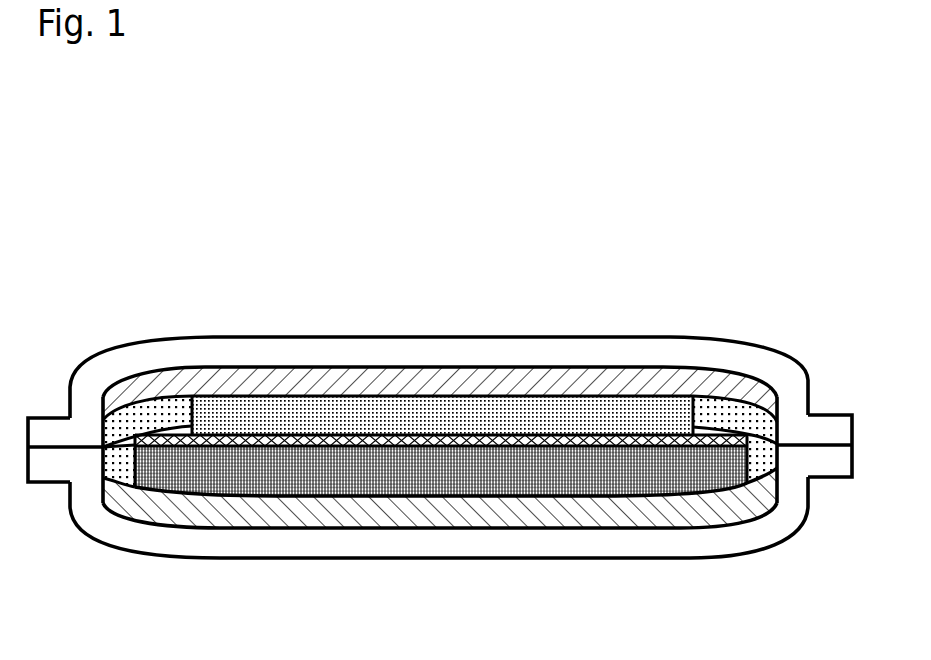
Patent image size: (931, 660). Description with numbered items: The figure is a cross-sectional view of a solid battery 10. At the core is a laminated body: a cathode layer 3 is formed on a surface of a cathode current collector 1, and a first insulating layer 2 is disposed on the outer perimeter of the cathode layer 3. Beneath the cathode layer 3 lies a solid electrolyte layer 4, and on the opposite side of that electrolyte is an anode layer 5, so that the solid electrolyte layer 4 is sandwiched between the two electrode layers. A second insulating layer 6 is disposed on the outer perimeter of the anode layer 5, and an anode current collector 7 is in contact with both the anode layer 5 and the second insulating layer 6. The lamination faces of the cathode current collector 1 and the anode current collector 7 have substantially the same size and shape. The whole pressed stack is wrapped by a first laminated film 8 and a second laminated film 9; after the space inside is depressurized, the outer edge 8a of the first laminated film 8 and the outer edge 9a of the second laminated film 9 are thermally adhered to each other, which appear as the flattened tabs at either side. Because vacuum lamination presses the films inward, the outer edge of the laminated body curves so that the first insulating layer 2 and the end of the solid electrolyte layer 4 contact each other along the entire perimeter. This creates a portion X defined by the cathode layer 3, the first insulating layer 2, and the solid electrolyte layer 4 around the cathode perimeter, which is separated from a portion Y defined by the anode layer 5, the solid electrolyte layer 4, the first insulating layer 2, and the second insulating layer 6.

The cathode current collector 1 is at (468, 380).
The first insulating layer 2 is at (159, 412).
The cathode layer 3 is at (393, 407).
The solid electrolyte layer 4 is at (325, 442).
The anode layer 5 is at (398, 475).
The second insulating layer 6 is at (122, 462).
The anode current collector 7 is at (472, 510).
The first laminated film 8 is at (525, 336).
The second laminated film 9 is at (547, 558).
The outer edge of the first laminated film 8a is at (835, 415).
The outer edge of the second laminated film 9a is at (837, 477).
The solid battery 10 is at (466, 126).
The portion X is at (695, 427).
The portion Y is at (763, 445).